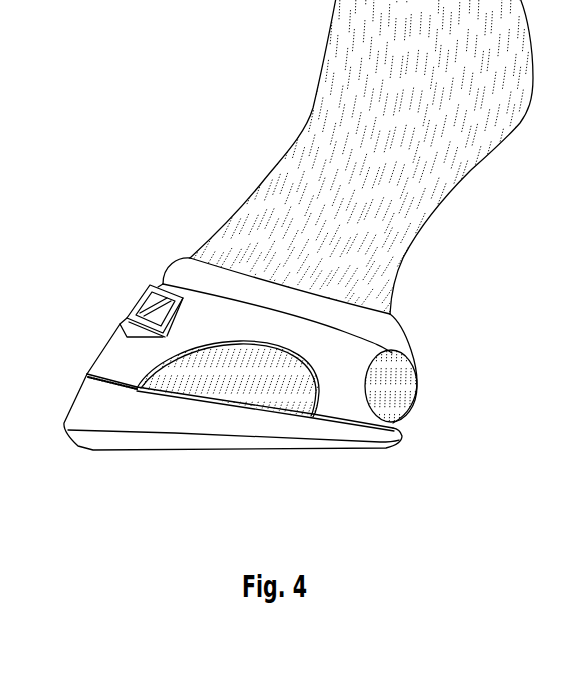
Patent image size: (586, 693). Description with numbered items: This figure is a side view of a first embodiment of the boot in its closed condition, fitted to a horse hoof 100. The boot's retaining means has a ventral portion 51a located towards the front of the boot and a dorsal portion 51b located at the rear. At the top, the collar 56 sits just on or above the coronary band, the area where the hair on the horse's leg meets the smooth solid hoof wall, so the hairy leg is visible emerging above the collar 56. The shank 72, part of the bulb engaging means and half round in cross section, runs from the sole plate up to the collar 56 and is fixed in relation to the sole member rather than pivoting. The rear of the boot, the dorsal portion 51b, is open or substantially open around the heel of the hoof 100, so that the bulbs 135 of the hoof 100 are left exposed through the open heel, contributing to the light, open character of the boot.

The ventral portion 51a is at (150, 236).
The dorsal portion 51b is at (455, 340).
The collar 56 is at (338, 312).
The shank 72 is at (397, 433).
The hoof 100 is at (243, 388).
The bulbs 135 is at (397, 383).